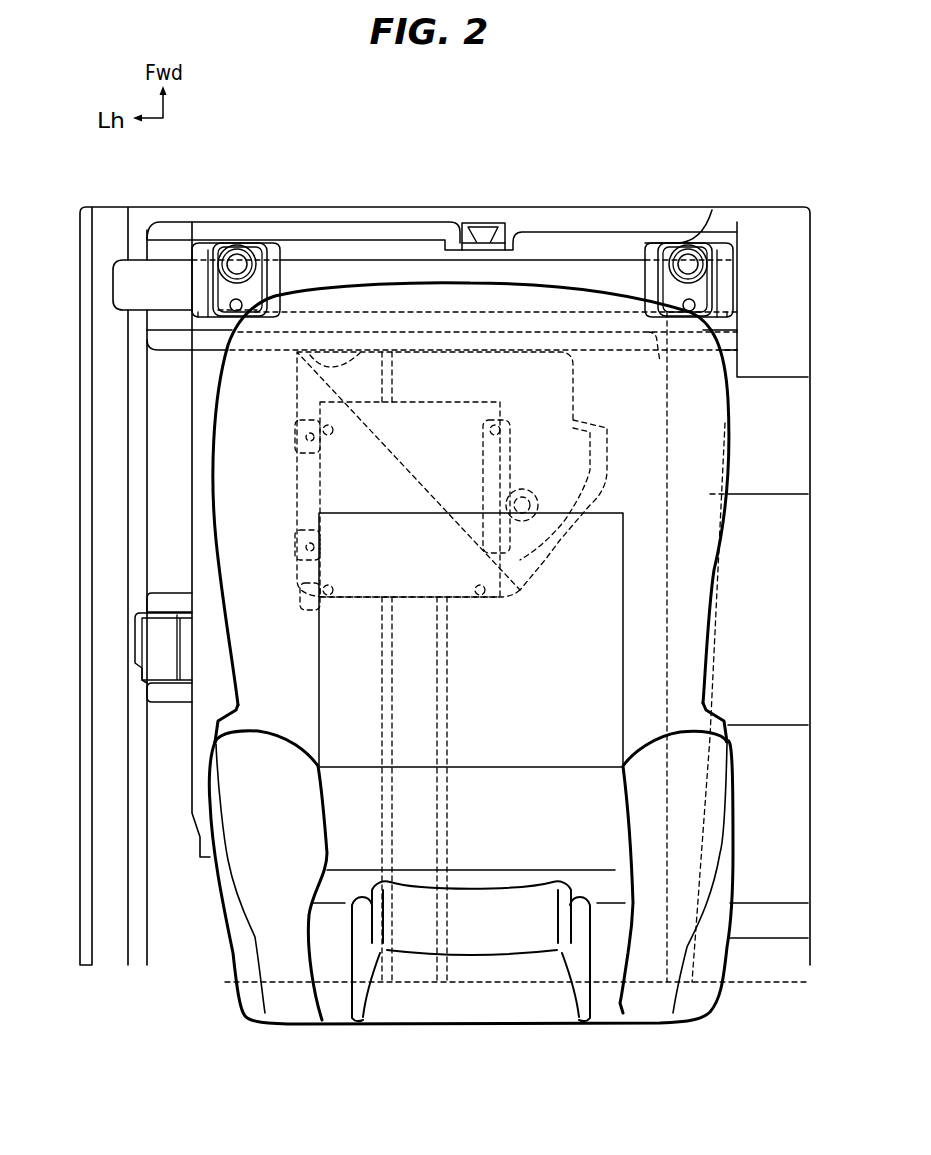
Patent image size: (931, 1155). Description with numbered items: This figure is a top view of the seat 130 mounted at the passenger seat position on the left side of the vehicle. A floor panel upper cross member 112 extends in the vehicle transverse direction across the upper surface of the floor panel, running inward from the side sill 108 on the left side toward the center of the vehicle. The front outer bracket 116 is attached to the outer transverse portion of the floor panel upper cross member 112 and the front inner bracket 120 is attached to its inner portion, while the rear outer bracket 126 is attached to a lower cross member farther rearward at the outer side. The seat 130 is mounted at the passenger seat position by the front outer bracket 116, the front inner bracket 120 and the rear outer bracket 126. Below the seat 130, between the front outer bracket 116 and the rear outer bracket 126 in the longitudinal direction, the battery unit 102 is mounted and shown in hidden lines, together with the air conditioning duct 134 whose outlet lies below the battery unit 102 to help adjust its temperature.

The battery unit 102 is at (428, 423).
The side sill 108 is at (106, 483).
The floor panel upper cross member 112 is at (334, 273).
The front outer bracket 116 is at (198, 270).
The front inner bracket 120 is at (653, 273).
The rear outer bracket 126 is at (157, 663).
The seat 130 is at (642, 1007).
The air conditioning duct 134 is at (512, 385).